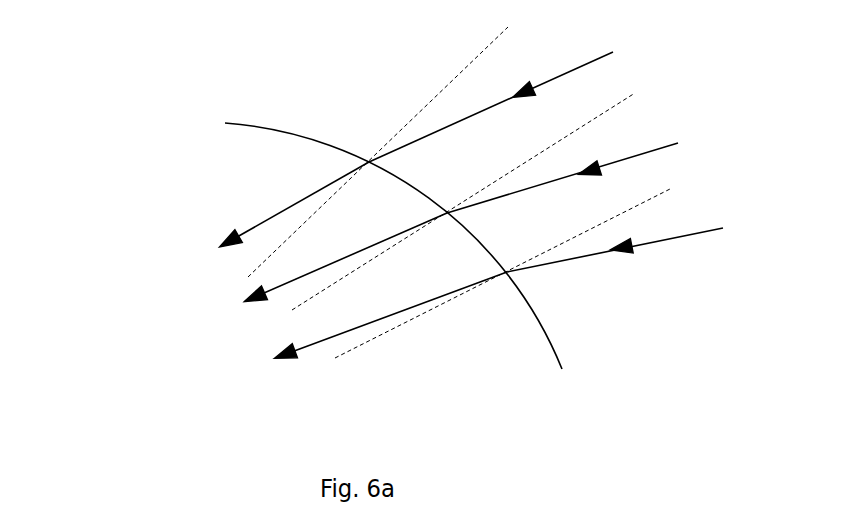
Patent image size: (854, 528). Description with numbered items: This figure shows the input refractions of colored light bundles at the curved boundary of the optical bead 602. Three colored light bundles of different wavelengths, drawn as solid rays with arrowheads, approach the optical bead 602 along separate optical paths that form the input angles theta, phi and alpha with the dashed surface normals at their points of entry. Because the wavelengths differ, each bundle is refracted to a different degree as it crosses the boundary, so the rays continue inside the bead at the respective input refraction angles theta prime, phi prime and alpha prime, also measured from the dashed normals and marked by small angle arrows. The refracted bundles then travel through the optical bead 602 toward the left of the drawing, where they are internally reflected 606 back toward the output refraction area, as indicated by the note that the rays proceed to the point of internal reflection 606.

The optical bead 602 is at (250, 122).
The internal reflection 606 is at (277, 295).